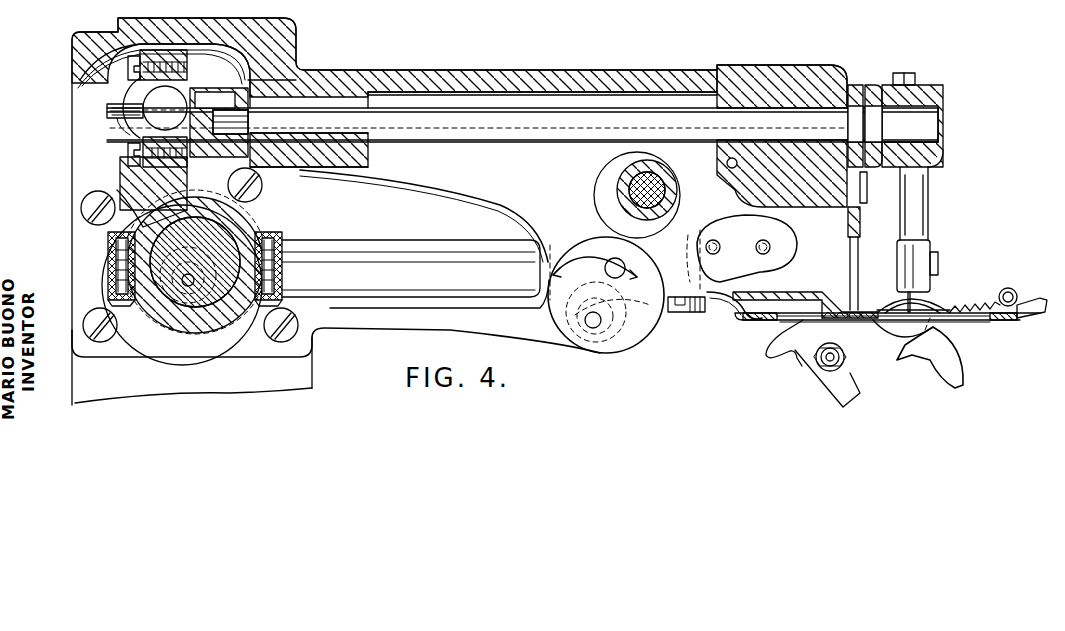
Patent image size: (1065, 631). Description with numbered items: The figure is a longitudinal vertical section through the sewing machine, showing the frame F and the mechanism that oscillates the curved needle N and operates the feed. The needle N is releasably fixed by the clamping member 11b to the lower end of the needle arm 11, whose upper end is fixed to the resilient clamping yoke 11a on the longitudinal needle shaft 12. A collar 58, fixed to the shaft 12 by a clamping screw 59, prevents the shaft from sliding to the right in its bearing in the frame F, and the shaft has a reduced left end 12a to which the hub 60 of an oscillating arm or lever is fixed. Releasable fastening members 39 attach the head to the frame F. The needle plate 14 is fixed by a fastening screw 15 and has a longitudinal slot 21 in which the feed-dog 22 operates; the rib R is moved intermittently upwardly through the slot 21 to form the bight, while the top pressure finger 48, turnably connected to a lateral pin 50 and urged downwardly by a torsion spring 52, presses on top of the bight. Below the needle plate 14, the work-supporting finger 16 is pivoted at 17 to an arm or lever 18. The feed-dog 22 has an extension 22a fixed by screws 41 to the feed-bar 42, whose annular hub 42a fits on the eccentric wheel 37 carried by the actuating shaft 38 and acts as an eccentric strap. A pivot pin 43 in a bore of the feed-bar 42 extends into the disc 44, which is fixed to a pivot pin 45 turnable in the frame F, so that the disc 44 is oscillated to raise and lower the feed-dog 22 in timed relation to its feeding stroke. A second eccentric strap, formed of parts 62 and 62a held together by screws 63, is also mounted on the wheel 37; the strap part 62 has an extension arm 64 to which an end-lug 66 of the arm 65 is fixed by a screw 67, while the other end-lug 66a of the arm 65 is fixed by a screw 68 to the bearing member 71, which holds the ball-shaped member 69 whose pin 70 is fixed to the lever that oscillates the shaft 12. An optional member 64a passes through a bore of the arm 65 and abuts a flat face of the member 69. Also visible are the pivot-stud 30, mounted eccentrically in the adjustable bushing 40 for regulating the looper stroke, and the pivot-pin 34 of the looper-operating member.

The frame F is at (80, 289).
The needle arm 11 is at (926, 196).
The resilient clamping yoke 11a is at (940, 152).
The clamping member 11b is at (938, 265).
The needle shaft 12 is at (552, 138).
The reduced left end 12a is at (247, 122).
The needle plate 14 is at (760, 320).
The fastening screw 15 is at (690, 313).
The work-supporting finger 16 is at (780, 345).
The pivot 17 is at (826, 360).
The arm or lever 18 is at (830, 385).
The longitudinal slot 21 is at (965, 322).
The feed-dog 22 is at (840, 310).
The extension 22a is at (797, 268).
The pivot-stud 30 is at (655, 182).
The pivot-pin 34 is at (182, 16).
The eccentric wheel 37 is at (185, 300).
The actuating shaft 38 is at (150, 290).
The releasable fastening members 39 is at (92, 204).
The bushing 40 is at (594, 181).
The screws 41 is at (716, 245).
The feed-bar 42 is at (417, 262).
The annular hub 42a is at (150, 290).
The pivot pin 43 is at (623, 266).
The disc 44 is at (642, 337).
The pivot pin 45 is at (590, 322).
The top pressure finger 48 is at (962, 307).
The lateral pin 50 is at (1012, 290).
The torsion spring 52 is at (1028, 302).
The collar 58 is at (876, 84).
The clamping screw 59 is at (858, 84).
The hub 60 is at (252, 88).
The strap part 62 is at (245, 228).
The strap part 62a is at (222, 320).
The screws 63 is at (107, 242).
The extension arm 64 is at (140, 175).
The optional member 64a is at (108, 115).
The arm 65 is at (120, 95).
The end-lug 66 is at (137, 46).
The cover lip 66a is at (130, 135).
The screw 67 is at (130, 153).
The screw 68 is at (130, 60).
The member 69 is at (152, 97).
The pin 70 is at (200, 106).
The bearing member 71 is at (162, 53).
The curved needle N is at (915, 305).
The rib R is at (955, 378).